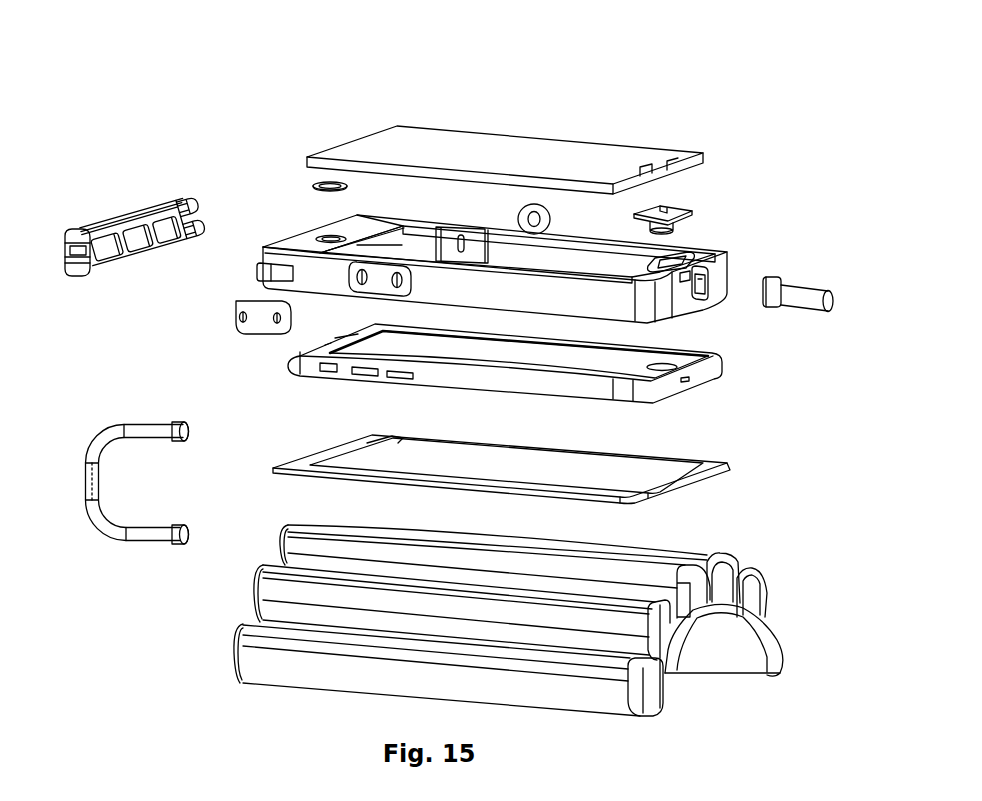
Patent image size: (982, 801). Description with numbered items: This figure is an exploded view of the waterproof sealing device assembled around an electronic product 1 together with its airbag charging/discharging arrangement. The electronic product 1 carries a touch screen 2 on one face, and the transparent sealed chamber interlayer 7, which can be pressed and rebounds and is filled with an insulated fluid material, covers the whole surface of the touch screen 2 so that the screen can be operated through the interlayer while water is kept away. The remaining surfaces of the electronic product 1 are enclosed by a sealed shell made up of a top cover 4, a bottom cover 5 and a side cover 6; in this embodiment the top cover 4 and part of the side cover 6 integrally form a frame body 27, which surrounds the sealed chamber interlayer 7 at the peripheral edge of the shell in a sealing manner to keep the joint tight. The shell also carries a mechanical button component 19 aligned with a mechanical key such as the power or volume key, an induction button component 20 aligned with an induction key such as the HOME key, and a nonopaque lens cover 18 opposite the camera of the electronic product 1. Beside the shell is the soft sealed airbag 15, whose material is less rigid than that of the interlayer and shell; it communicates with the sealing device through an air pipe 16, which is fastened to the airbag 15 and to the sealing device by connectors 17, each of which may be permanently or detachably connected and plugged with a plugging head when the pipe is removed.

The electronic product 1 is at (300, 377).
The touch screen 2 is at (617, 360).
The top cover 4 is at (693, 255).
The bottom cover 5 is at (617, 474).
The side cover 6 is at (122, 230).
The sealed chamber interlayer 7 is at (460, 147).
The airbag 15 is at (257, 662).
The air pipe 16 is at (97, 471).
The connector 17 is at (170, 546).
The lens cover 18 is at (317, 185).
The mechanical button component 19 is at (535, 210).
The induction button component 20 is at (670, 207).
The frame body 27 is at (316, 247).